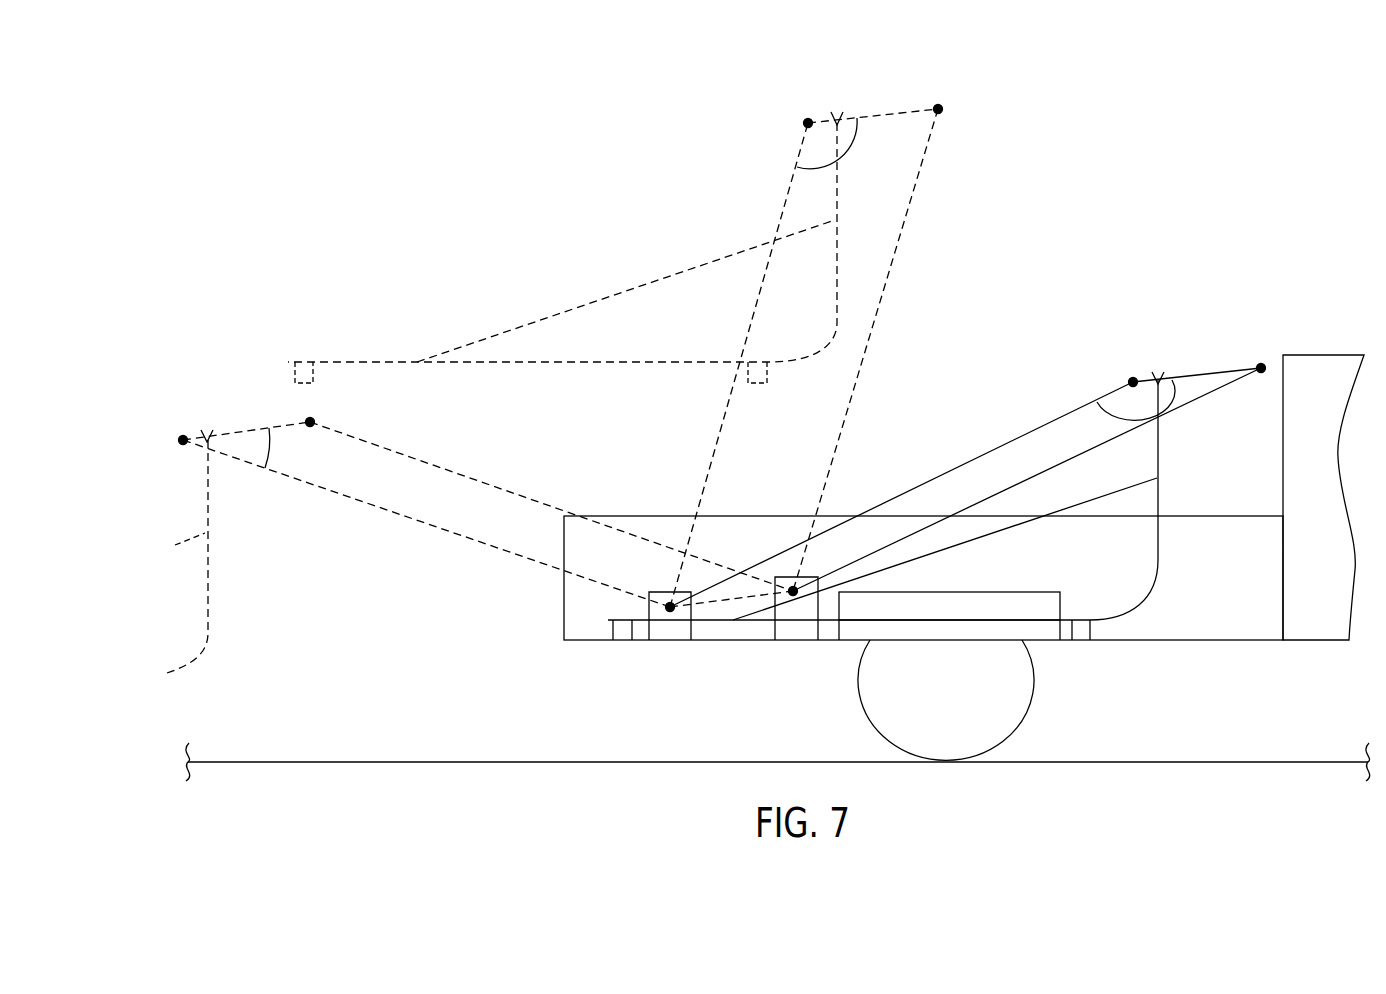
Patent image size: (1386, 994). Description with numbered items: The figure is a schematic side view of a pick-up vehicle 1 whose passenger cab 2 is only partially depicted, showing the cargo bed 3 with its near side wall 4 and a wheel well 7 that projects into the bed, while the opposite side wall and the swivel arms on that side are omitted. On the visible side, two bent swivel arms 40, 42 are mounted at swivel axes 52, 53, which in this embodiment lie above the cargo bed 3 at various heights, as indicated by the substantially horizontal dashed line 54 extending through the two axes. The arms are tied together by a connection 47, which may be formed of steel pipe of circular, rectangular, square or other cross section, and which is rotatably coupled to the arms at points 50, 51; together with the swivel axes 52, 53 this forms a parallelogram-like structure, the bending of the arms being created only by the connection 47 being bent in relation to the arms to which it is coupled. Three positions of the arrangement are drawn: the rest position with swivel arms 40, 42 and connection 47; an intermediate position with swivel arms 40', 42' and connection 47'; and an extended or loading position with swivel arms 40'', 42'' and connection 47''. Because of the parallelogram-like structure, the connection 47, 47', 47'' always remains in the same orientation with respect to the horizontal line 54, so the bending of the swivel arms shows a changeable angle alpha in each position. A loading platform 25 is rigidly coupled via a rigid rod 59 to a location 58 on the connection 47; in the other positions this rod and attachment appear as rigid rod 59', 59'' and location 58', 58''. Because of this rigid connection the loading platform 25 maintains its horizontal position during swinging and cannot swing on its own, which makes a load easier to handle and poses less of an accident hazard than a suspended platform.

The pick-up vehicle 1 is at (1300, 345).
The passenger cab 2 is at (1343, 361).
The cargo bed 3 is at (1192, 638).
The side wall 4 is at (1236, 577).
The wheel well 7 is at (1029, 600).
The loading platform 25 is at (1106, 618).
The swivel arm 40 is at (901, 492).
The swivel arm 40' is at (626, 365).
The swivel arm 40'' is at (426, 523).
The swivel arm 42 is at (997, 494).
The swivel arm 42' is at (885, 350).
The swivel arm 42'' is at (551, 506).
The connection 47 is at (1197, 353).
The connection 47' is at (873, 138).
The connection 47'' is at (247, 412).
The point 50 is at (1131, 380).
The point 51 is at (1259, 366).
The swivel axis 52 is at (668, 604).
The swivel axis 53 is at (792, 589).
The dashed line 54 is at (703, 604).
The location 58 is at (1136, 374).
The location 58' is at (829, 117).
The location 58'' is at (222, 424).
The rigid rod 59 is at (1150, 500).
The rigid rod 59' is at (592, 253).
The rigid rod 59'' is at (217, 556).